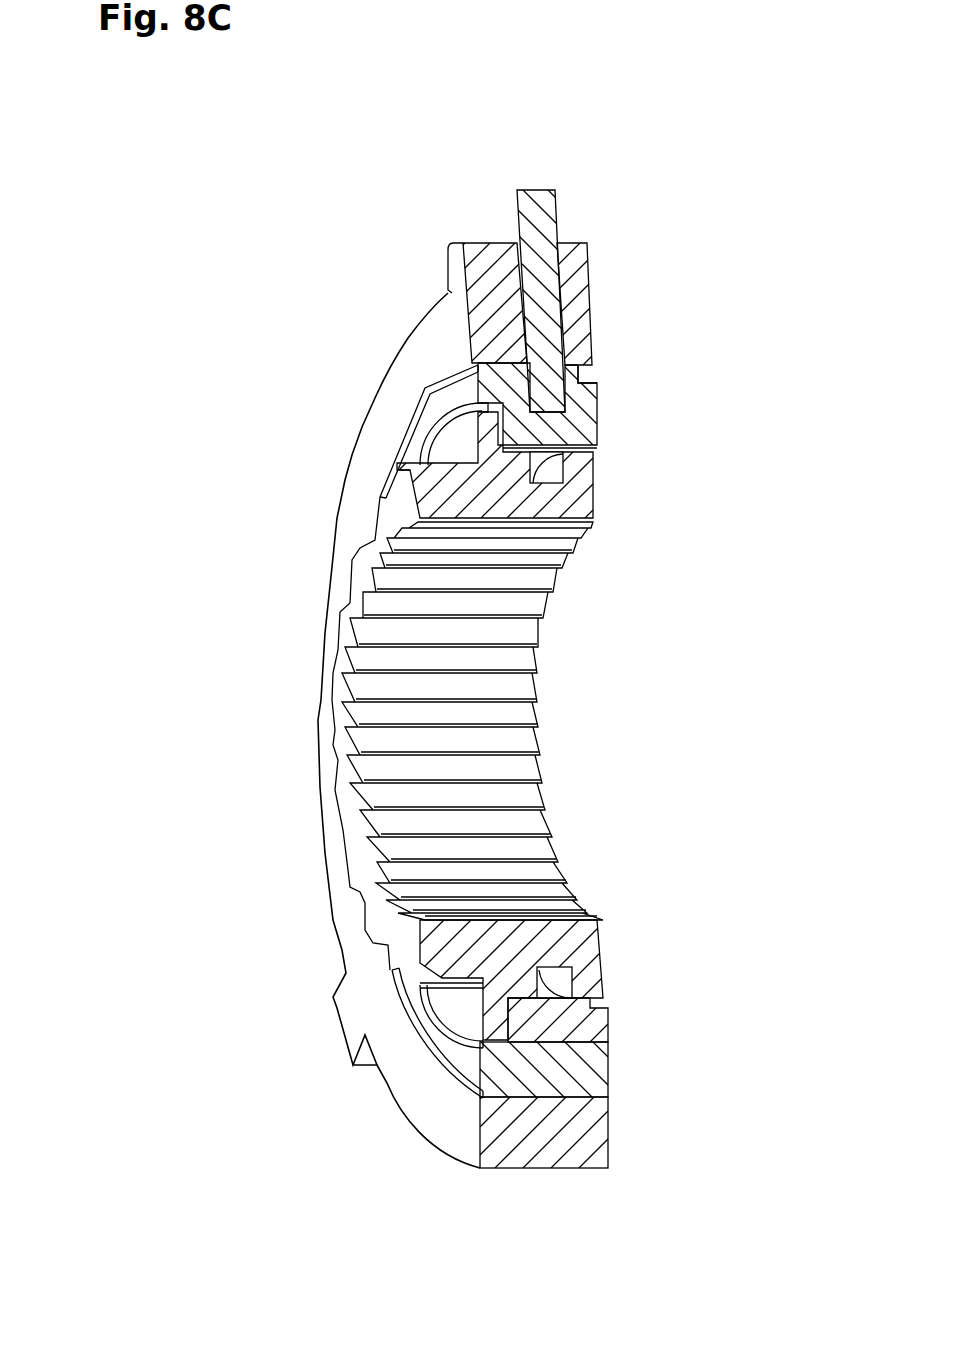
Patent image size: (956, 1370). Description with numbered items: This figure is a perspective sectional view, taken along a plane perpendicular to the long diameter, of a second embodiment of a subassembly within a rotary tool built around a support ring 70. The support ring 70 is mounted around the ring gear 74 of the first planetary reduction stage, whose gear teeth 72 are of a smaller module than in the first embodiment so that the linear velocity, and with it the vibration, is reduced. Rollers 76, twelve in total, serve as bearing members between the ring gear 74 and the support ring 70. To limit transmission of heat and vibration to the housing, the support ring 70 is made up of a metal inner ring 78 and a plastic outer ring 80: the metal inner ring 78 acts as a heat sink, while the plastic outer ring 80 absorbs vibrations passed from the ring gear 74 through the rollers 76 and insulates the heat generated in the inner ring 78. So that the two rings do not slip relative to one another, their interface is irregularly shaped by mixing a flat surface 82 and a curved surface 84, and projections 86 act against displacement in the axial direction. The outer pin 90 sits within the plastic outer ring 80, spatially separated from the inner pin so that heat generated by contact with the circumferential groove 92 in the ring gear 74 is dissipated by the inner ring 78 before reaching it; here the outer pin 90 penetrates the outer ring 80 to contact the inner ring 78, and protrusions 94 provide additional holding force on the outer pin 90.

The support ring 70 is at (580, 327).
The gear teeth 72 is at (513, 660).
The ring gear 74 is at (563, 503).
The rollers 76 is at (558, 1020).
The metal inner ring 78 is at (582, 1073).
The plastic outer ring 80 is at (540, 1135).
The flat surface 82 is at (445, 383).
The curved surface 84 is at (397, 447).
The projections 86 is at (587, 378).
The outer pin 90 is at (537, 207).
The circumferential groove 92 is at (553, 980).
The protrusions 94 is at (487, 262).